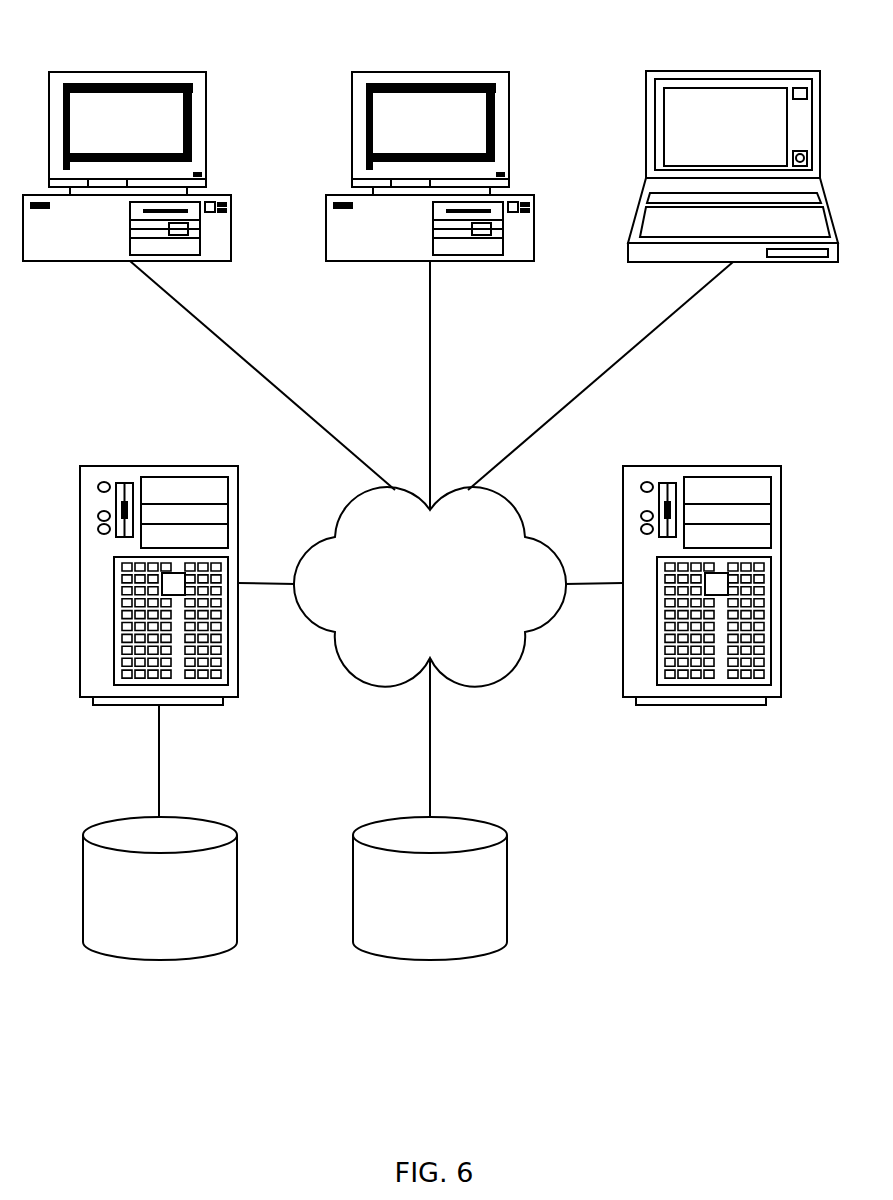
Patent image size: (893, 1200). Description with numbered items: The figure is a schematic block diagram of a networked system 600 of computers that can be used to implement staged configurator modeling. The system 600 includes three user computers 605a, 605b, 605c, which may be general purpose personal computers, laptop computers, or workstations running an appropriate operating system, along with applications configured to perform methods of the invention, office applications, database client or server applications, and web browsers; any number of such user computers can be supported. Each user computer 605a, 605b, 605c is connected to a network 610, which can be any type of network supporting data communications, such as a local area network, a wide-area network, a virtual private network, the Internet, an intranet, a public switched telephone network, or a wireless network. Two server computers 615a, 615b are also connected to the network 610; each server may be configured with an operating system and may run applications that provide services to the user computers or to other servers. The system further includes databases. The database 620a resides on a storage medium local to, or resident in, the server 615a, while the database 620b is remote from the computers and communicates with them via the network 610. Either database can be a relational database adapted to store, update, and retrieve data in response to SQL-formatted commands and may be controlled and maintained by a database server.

The system 600 is at (431, 536).
The user computer 605a is at (231, 212).
The user computer 605b is at (326, 213).
The user computer 605c is at (646, 168).
The network 610 is at (467, 680).
The server 615a is at (80, 583).
The server 615b is at (780, 583).
The database 620a is at (157, 960).
The database 620b is at (430, 960).